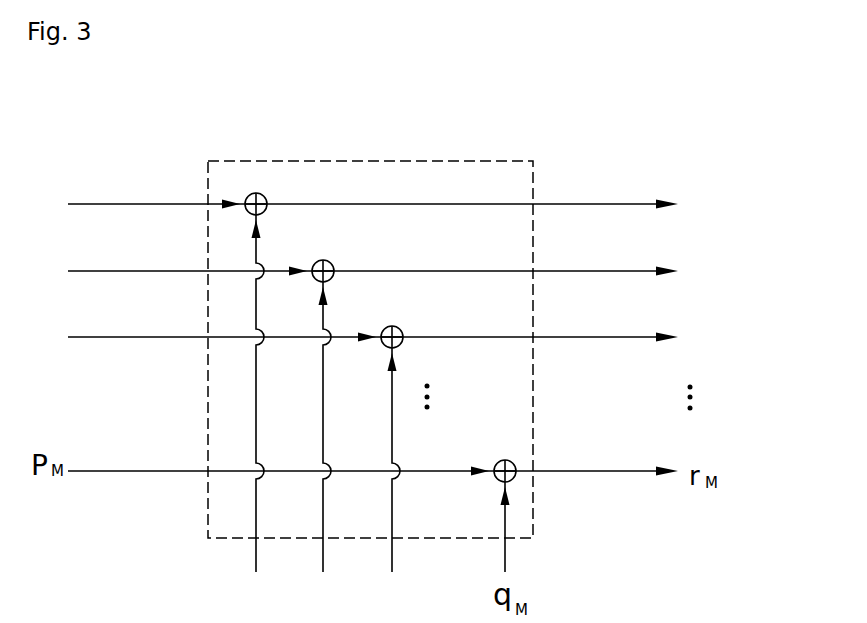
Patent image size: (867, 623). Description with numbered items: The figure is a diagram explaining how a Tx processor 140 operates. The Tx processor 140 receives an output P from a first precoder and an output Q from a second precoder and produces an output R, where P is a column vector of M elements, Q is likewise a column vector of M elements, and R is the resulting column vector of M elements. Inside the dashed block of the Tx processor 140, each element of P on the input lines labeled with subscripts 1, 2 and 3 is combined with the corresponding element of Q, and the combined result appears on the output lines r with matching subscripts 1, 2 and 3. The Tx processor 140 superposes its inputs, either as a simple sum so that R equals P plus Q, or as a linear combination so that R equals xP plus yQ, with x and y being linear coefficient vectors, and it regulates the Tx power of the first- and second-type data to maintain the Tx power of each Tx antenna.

The Tx processor 140 is at (474, 160).
The first signal path (P1, q1, r1) 1 is at (373, 400).
The second signal path (P2, q2, r2) 2 is at (373, 434).
The third signal path (P3, q3, r3) 3 is at (373, 467).